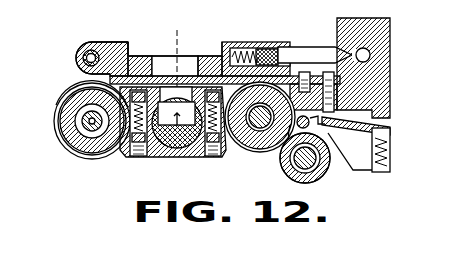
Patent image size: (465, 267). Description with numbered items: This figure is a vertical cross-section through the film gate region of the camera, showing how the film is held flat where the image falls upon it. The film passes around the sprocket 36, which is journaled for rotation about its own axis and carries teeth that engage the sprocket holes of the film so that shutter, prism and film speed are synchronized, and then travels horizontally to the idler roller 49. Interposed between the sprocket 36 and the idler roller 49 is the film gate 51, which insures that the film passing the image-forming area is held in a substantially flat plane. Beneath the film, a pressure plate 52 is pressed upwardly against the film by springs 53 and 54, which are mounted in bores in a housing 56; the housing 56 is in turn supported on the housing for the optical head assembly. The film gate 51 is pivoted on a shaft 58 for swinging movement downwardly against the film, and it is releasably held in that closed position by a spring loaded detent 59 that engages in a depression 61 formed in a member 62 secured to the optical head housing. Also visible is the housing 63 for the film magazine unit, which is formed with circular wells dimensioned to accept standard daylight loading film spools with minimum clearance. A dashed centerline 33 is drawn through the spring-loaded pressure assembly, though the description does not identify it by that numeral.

The centerline 33 is at (178, 36).
The sprocket 36 is at (258, 146).
The idler roller 49 is at (68, 138).
The film gate 51 is at (268, 36).
The pressure plate 52 is at (125, 90).
The spring 53 is at (124, 126).
The spring 54 is at (208, 164).
The housing 56 is at (170, 164).
The shaft 58 is at (80, 58).
The spring loaded detent 59 is at (323, 53).
The depression 61 is at (360, 50).
The member 62 is at (380, 90).
The housing 63 is at (305, 76).